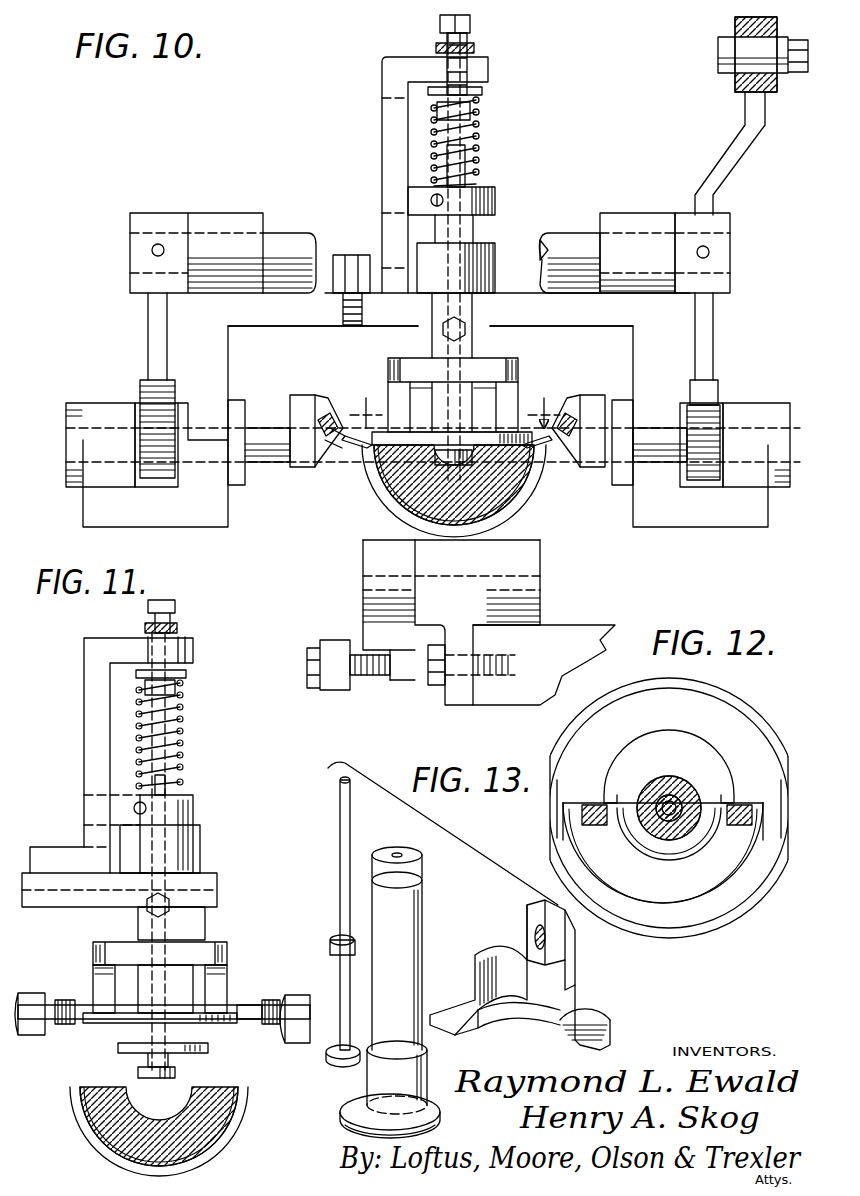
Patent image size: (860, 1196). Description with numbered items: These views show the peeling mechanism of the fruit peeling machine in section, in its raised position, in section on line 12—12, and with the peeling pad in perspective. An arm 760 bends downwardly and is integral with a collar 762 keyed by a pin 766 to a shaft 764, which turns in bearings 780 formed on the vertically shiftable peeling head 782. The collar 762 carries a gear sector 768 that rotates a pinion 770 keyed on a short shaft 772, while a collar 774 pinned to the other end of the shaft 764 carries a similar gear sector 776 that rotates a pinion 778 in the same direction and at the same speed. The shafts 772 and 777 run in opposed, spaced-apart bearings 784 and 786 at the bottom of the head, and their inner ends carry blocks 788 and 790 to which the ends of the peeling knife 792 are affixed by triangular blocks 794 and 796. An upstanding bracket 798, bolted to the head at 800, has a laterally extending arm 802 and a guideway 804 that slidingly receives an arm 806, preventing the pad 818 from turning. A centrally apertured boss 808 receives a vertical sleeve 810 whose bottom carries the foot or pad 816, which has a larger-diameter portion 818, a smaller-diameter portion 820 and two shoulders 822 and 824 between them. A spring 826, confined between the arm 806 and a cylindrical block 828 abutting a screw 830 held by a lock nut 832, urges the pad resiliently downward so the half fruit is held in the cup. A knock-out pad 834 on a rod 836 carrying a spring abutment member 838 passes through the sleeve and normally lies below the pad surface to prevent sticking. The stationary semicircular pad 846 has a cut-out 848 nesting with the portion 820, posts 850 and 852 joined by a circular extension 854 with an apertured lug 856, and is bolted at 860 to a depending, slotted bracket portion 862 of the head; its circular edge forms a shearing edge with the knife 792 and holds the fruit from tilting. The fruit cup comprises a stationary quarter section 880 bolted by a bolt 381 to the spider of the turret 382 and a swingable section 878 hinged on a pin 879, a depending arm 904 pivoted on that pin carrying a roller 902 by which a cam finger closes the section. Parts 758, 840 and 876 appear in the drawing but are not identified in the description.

In FIG. 10, the section line 12— 12 is at (455, 403).
In FIG. 10, the bolt 381 is at (430, 668).
In FIG. 10, the turret spider 382 is at (588, 630).
In FIG. 10, the adjusting nut 758 is at (730, 25).
In FIG. 10, the arm 760 is at (720, 128).
In FIG. 10, the collar 762 is at (681, 213).
In FIG. 10, the shaft 764 is at (567, 250).
In FIG. 10, the pin 766 is at (709, 250).
In FIG. 10, the gear sector 768 is at (700, 321).
In FIG. 10, the pinion 770 is at (706, 410).
In FIG. 10, the short shaft 772 is at (610, 462).
In FIG. 10, the collar 774 is at (130, 252).
In FIG. 10, the gear sector 776 is at (157, 326).
In FIG. 10, the shaft 777 is at (265, 463).
In FIG. 10, the pinion 778 is at (156, 405).
In FIG. 10, the bearings 780 is at (222, 213).
In FIG. 10, the peeling head 782 is at (577, 326).
In FIG. 11, the peeling head 782 is at (56, 895).
In FIG. 10, the bearing 784 is at (200, 518).
In FIG. 10, the bearing 786 is at (675, 530).
In FIG. 10, the block 788 is at (592, 398).
In FIG. 11, the block 788 is at (290, 1000).
In FIG. 10, the block 790 is at (302, 396).
In FIG. 10, the peeling knife 792 is at (350, 450).
In FIG. 11, the peeling knife 792 is at (68, 1008).
In FIG. 10, the triangular block 794 is at (325, 448).
In FIG. 11, the triangular block 794 is at (38, 1022).
In FIG. 10, the triangular block 796 is at (565, 448).
In FIG. 11, the triangular block 796 is at (275, 1030).
In FIG. 10, the upstanding bracket 798 is at (392, 225).
In FIG. 10, the bolt 800 is at (349, 273).
In FIG. 10, the laterally extending arm 802 is at (482, 70).
In FIG. 10, the guideway 804 is at (486, 137).
In FIG. 11, the guideway 804 is at (95, 760).
In FIG. 10, the arm 806 is at (478, 187).
In FIG. 10, the centrally apertured boss 808 is at (478, 240).
In FIG. 12, the vertical sleeve 810 is at (676, 790).
In FIG. 13, the vertical sleeve 810 is at (412, 895).
In FIG. 13, the foot or pad 816 is at (438, 1105).
In FIG. 11, the larger-diameter pad portion 818 is at (118, 1046).
In FIG. 13, the larger-diameter pad portion 818 is at (345, 1121).
In FIG. 13, the smaller-diameter portion 820 is at (437, 1090).
In FIG. 12, the shoulder 822 is at (595, 806).
In FIG. 13, the shoulder 822 is at (440, 1122).
In FIG. 12, the shoulder 824 is at (725, 798).
In FIG. 13, the shoulder 824 is at (370, 1082).
In FIG. 11, the spring 826 is at (185, 718).
In FIG. 11, the cylindrical block 828 is at (180, 690).
In FIG. 11, the screw 830 is at (170, 612).
In FIG. 11, the lock nut 832 is at (183, 628).
In FIG. 10, the knock-out pad 834 is at (452, 467).
In FIG. 11, the knock-out pad 834 is at (176, 1072).
In FIG. 13, the knock-out pad 834 is at (326, 1050).
In FIG. 12, the rod 836 is at (662, 802).
In FIG. 13, the rod 836 is at (335, 968).
In FIG. 13, the spring abutment member 838 is at (345, 935).
In FIG. 13, the rod 840 is at (342, 783).
In FIG. 11, the stationary pad 846 is at (228, 1010).
In FIG. 13, the stationary pad 846 is at (595, 1008).
In FIG. 13, the semicircular cut-out 848 is at (520, 1022).
In FIG. 11, the upstanding post 850 is at (100, 975).
In FIG. 12, the upstanding post 850 is at (565, 805).
In FIG. 13, the upstanding post 850 is at (598, 1022).
In FIG. 11, the upstanding post 852 is at (222, 975).
In FIG. 12, the upstanding post 852 is at (740, 805).
In FIG. 13, the upstanding post 852 is at (462, 985).
In FIG. 13, the circular extension 854 is at (572, 963).
In FIG. 11, the apertured lug 856 is at (192, 930).
In FIG. 13, the apertured lug 856 is at (530, 928).
In FIG. 10, the bolt 860 is at (467, 323).
In FIG. 11, the bolt 860 is at (170, 900).
In FIG. 11, the depending bracket portion 862 is at (205, 930).
In FIG. 12, the housing 876 is at (760, 703).
In FIG. 10, the swingable cup section 878 is at (388, 530).
In FIG. 12, the swingable cup section 878 is at (735, 915).
In FIG. 10, the pin 879 is at (530, 593).
In FIG. 12, the stationary cup section 880 is at (700, 688).
In FIG. 10, the roller 902 is at (328, 645).
In FIG. 10, the depending arm 904 is at (370, 630).